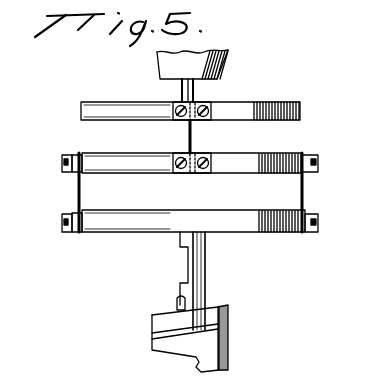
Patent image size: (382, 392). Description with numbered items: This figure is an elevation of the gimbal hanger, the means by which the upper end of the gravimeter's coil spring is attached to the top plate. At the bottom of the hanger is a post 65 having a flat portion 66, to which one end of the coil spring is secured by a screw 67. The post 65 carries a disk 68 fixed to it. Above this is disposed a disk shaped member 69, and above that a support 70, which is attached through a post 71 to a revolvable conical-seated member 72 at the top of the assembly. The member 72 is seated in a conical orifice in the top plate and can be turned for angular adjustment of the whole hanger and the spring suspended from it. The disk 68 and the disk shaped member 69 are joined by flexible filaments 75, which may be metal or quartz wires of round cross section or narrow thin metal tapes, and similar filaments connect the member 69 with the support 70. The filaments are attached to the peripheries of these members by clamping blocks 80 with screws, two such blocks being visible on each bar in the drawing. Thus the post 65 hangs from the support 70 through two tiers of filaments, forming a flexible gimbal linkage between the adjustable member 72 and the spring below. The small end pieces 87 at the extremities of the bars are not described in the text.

The post 65 is at (206, 278).
The flat portion 66 is at (190, 301).
The screw 67 is at (177, 303).
The disk 68 is at (268, 234).
The disk shaped member 69 is at (277, 157).
The support 70 is at (292, 102).
The post 71 is at (194, 96).
The conical-seated member 72 is at (222, 63).
The flexible filaments 75 is at (194, 137).
The clamping blocks 80 is at (183, 121).
The screw block 87 is at (170, 109).